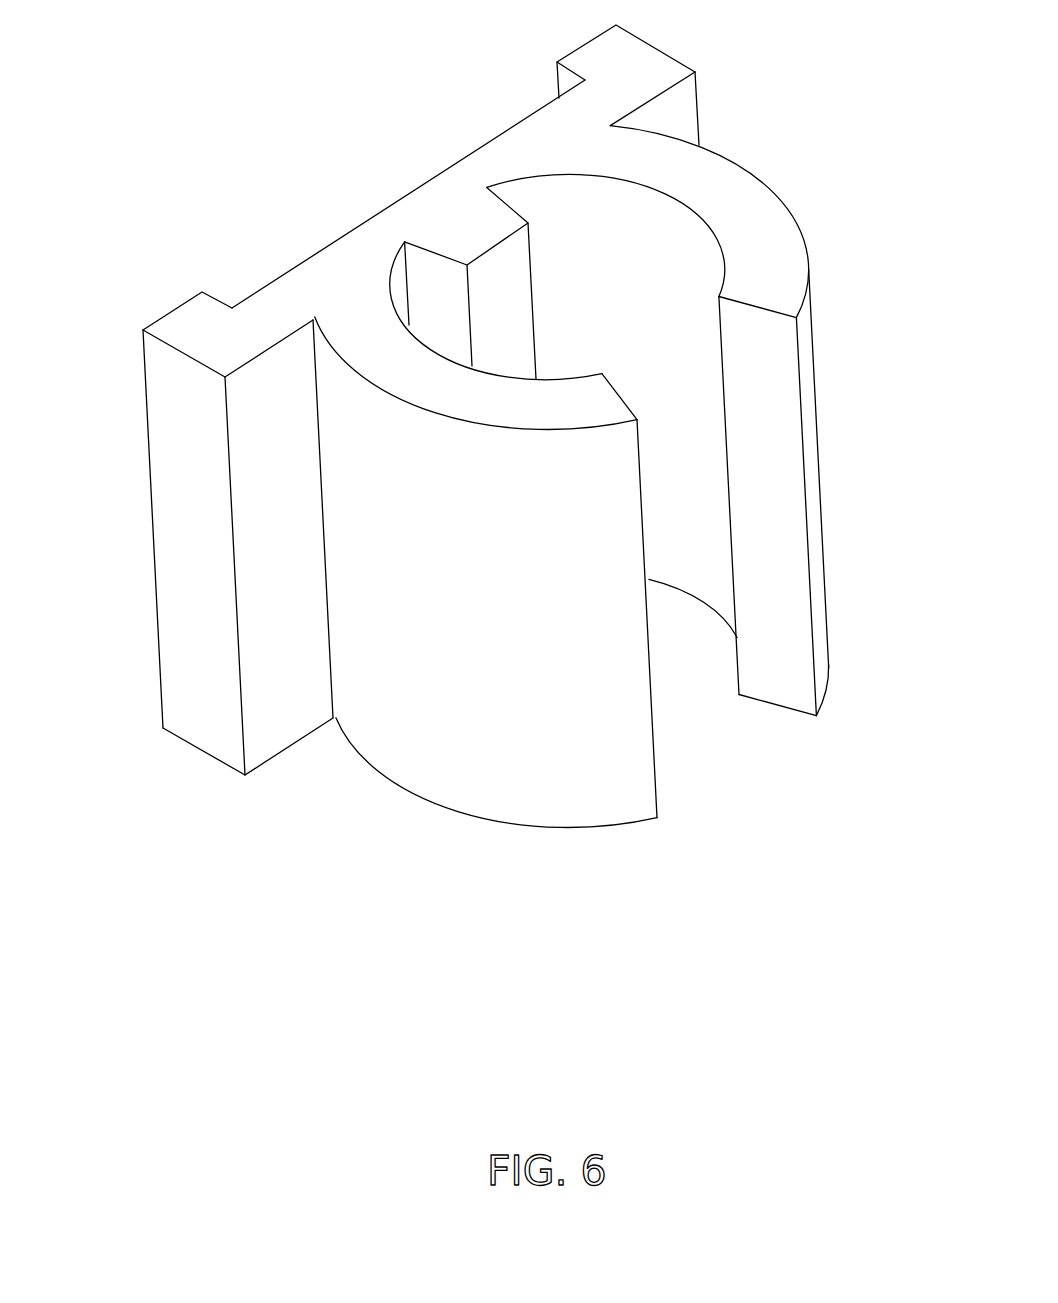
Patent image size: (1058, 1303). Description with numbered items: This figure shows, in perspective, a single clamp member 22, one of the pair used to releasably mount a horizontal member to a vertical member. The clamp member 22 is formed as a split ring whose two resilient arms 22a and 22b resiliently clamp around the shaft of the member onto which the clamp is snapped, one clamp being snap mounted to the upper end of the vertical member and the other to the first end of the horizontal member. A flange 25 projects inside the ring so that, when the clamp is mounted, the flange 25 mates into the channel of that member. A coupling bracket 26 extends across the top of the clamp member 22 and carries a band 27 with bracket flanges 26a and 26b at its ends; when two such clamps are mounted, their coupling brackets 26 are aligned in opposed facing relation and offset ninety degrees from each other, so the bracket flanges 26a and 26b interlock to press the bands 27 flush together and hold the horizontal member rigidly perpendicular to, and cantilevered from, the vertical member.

The clamp member 22 is at (788, 208).
The arm 22a is at (795, 713).
The arm 22b is at (660, 807).
The flange 25 is at (535, 320).
The coupling bracket 26 is at (650, 45).
The bracket flange 26a is at (593, 39).
The bracket flange 26b is at (180, 306).
The band 27 is at (427, 180).